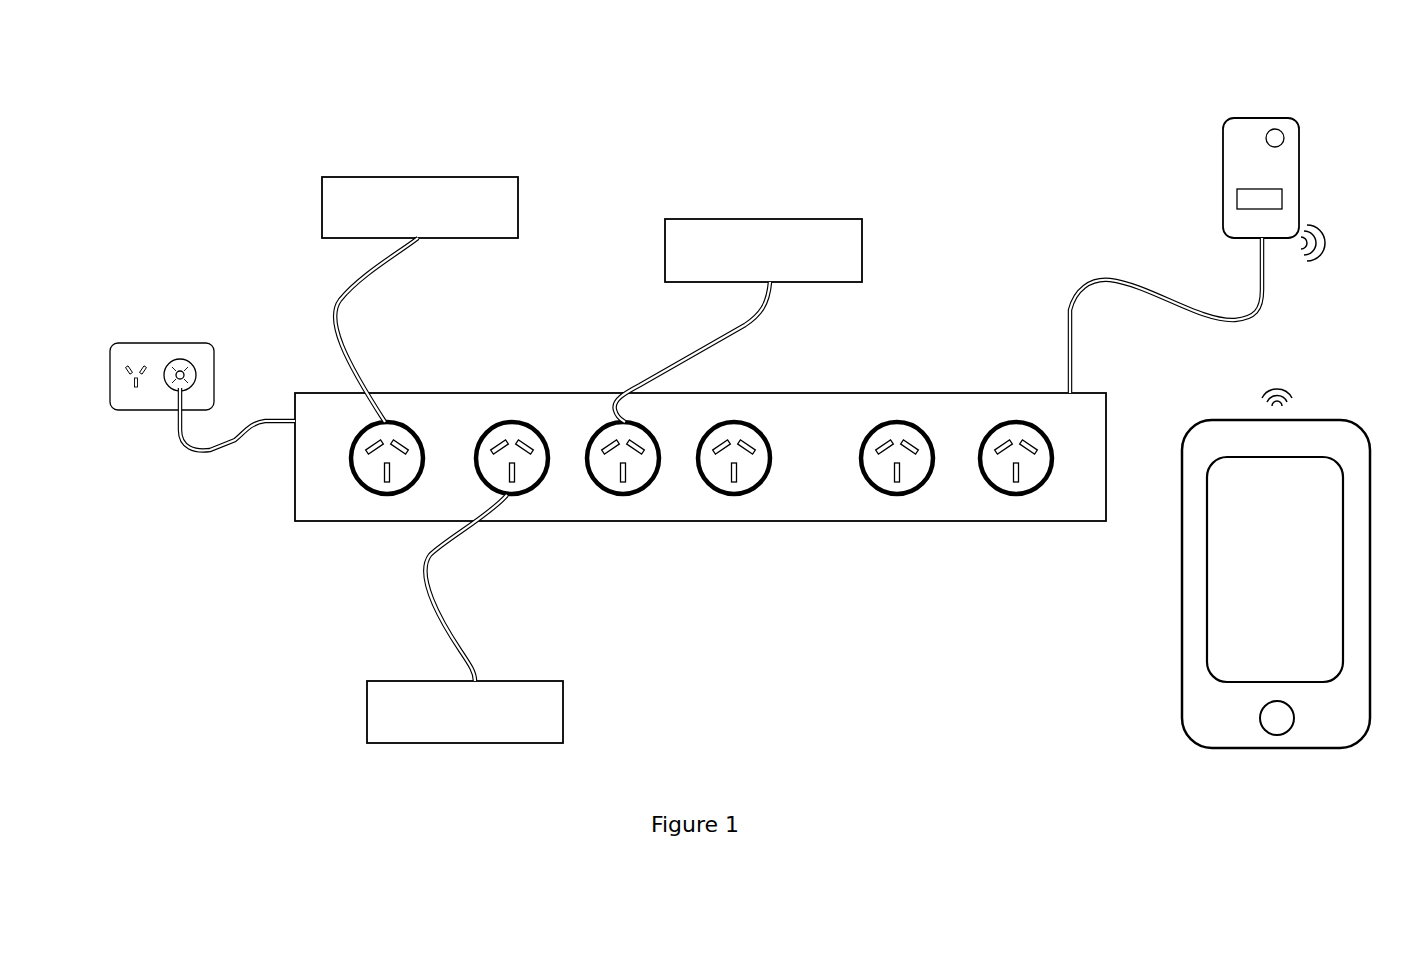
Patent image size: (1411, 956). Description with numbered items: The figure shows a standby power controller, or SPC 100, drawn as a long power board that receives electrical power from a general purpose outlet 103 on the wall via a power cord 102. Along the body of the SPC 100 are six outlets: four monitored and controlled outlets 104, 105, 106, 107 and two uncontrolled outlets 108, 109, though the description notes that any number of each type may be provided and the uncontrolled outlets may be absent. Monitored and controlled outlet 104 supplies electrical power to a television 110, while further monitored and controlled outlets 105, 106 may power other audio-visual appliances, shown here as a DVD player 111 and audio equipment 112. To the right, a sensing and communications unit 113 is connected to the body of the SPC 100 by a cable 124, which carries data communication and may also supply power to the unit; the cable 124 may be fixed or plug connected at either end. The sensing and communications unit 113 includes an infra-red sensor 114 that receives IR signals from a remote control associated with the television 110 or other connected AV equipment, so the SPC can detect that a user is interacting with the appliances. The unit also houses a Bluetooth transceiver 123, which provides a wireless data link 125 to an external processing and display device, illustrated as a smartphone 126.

The standby power controller 100 is at (965, 512).
The power cord 102 is at (182, 443).
The general purpose outlet 103 is at (185, 358).
The monitored and controlled outlet 104 is at (370, 472).
The monitored and controlled outlet 105 is at (510, 430).
The monitored and controlled outlet 106 is at (720, 478).
The monitored and controlled outlet 107 is at (607, 478).
The uncontrolled outlet 108 is at (897, 435).
The uncontrolled outlet 109 is at (1002, 435).
The television 110 is at (512, 197).
The DVD player 111 is at (380, 716).
The audio equipment 112 is at (850, 240).
The sensing and communications unit 113 is at (1225, 125).
The infra-red sensor 114 is at (1278, 138).
The Bluetooth transceiver 123 is at (1240, 194).
The cable 124 is at (1100, 278).
The data link 125 is at (1307, 260).
The smartphone 126 is at (1180, 655).